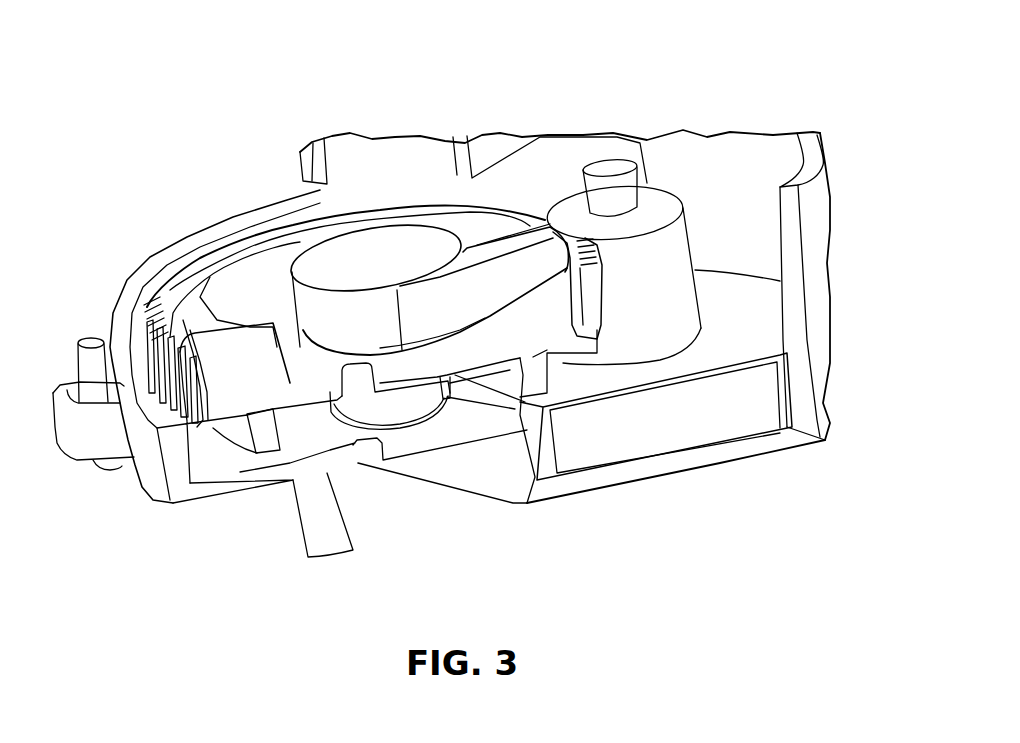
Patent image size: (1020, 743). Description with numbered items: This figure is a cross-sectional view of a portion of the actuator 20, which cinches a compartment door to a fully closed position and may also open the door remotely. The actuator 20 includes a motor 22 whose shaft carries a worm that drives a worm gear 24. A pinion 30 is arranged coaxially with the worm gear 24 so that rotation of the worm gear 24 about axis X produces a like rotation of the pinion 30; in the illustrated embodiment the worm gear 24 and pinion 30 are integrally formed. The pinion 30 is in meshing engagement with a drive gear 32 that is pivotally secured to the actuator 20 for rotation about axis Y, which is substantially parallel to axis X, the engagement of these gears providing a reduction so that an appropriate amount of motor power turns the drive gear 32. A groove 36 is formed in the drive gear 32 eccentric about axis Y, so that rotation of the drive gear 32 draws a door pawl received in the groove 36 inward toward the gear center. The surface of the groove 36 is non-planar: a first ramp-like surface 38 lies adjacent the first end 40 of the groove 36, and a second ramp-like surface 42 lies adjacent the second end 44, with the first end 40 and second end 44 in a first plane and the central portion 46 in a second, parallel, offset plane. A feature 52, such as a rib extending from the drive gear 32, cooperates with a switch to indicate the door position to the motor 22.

The actuator 20 is at (161, 168).
The motor 22 is at (537, 178).
The worm gear 24 is at (740, 330).
The pinion 30 is at (660, 258).
The drive gear 32 is at (158, 307).
The groove 36 is at (279, 300).
The first ramp-like surface 38 is at (485, 243).
The first end 40 is at (515, 227).
The second ramp-like surface 42 is at (513, 283).
The second end 44 is at (554, 262).
The central portion 46 is at (302, 367).
The feature 52 is at (263, 432).